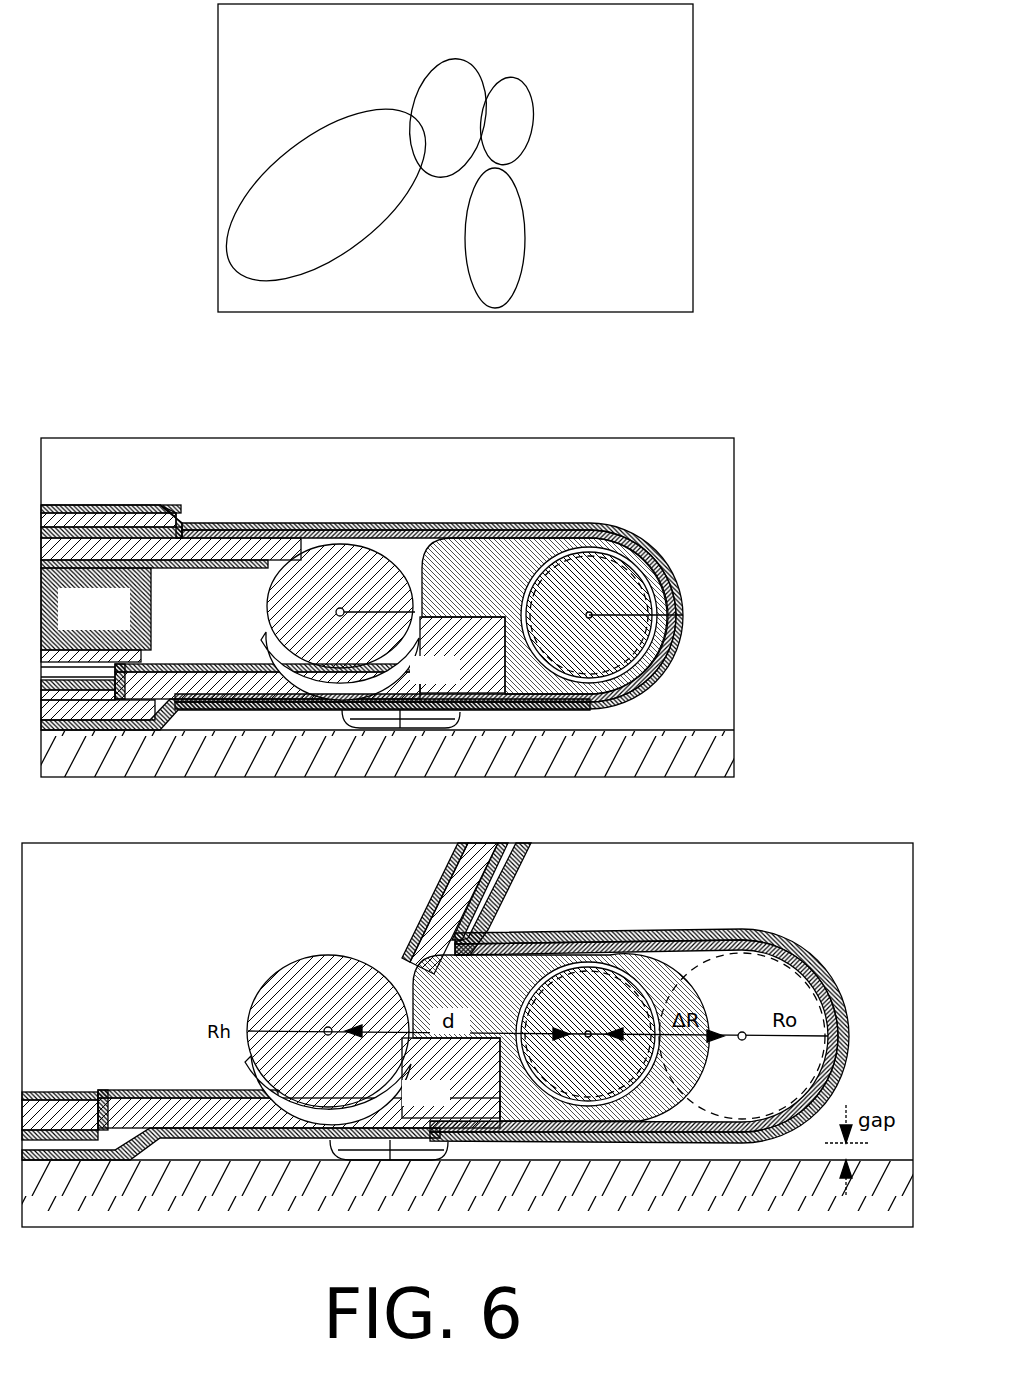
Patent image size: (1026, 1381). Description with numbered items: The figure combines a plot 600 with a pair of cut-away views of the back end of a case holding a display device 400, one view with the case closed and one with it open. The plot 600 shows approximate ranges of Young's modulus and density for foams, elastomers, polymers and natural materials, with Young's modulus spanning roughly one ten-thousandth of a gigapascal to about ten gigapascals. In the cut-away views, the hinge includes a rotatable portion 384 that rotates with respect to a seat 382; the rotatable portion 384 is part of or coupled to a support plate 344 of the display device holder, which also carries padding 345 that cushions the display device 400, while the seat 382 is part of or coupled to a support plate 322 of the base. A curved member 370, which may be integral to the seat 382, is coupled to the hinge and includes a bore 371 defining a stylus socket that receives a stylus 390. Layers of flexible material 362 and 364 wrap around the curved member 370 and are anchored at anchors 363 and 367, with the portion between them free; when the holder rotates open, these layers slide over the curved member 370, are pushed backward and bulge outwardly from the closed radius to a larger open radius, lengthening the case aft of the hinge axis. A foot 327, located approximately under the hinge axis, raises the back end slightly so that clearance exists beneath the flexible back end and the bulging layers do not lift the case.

The plot 600 is at (630, 42).
The anchor 363 is at (477, 876).
The padding 345 is at (115, 498).
The support plate 344 is at (440, 921).
The rotatable portion 384 is at (331, 785).
The seat 382 is at (303, 868).
The curved member 370 is at (557, 803).
The bore 371 is at (591, 785).
The stylus 390 is at (673, 802).
The layer of flexible material 362 is at (512, 820).
The layer of flexible material 364 is at (526, 831).
The display device 400 is at (76, 626).
The support plate 322 is at (306, 869).
The anchor 367 is at (453, 867).
The foot 327 is at (455, 713).